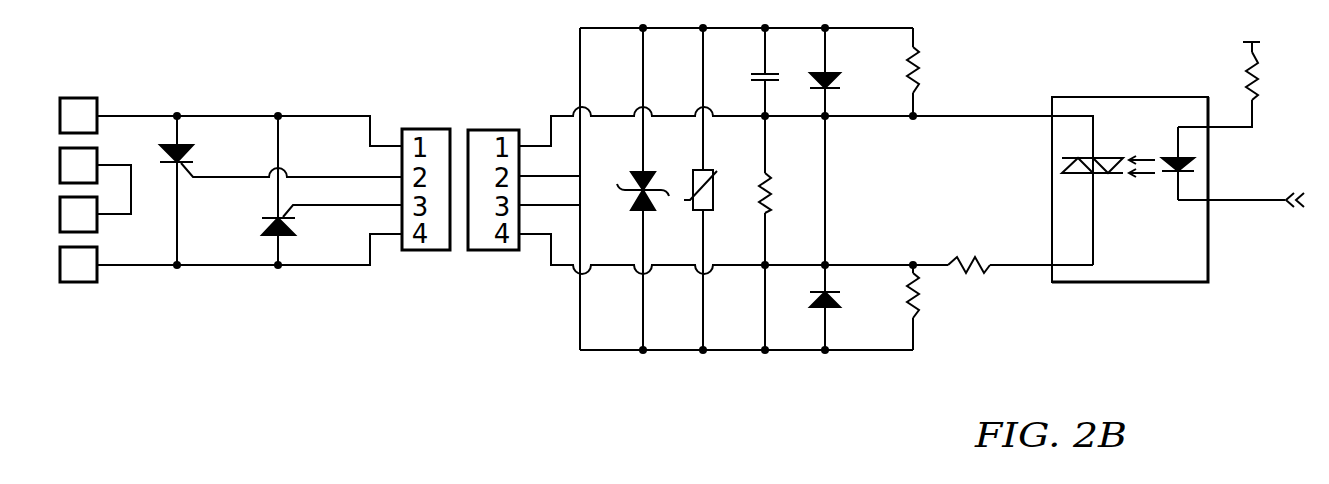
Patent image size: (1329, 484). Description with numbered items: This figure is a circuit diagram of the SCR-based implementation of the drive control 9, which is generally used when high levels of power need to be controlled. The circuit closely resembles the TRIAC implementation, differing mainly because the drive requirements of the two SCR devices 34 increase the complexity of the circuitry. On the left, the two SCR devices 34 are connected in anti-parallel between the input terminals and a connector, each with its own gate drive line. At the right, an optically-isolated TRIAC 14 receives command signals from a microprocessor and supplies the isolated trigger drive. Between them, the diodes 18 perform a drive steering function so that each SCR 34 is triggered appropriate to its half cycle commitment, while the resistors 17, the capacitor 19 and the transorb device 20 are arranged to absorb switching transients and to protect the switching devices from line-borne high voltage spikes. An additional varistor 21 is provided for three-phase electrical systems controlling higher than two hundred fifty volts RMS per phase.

The drive control 9 is at (192, 70).
The SCR device 34 is at (185, 152).
The transorb device 20 is at (637, 211).
The varistor 21 is at (707, 170).
The capacitor 19 is at (756, 70).
The diode 18 is at (834, 72).
The resistor 17 is at (771, 188).
The optically-isolated TRIAC 14 is at (1130, 283).